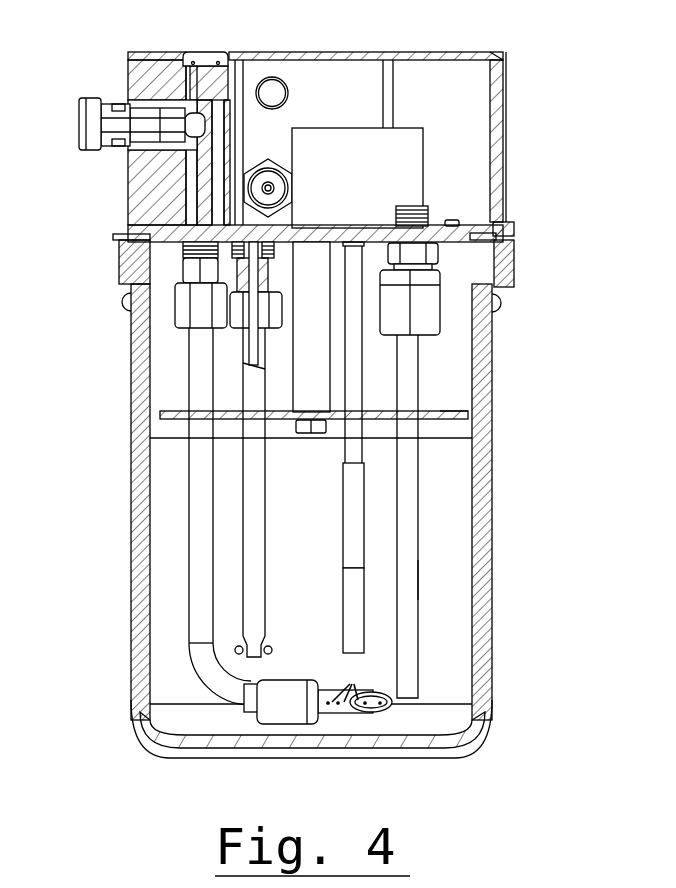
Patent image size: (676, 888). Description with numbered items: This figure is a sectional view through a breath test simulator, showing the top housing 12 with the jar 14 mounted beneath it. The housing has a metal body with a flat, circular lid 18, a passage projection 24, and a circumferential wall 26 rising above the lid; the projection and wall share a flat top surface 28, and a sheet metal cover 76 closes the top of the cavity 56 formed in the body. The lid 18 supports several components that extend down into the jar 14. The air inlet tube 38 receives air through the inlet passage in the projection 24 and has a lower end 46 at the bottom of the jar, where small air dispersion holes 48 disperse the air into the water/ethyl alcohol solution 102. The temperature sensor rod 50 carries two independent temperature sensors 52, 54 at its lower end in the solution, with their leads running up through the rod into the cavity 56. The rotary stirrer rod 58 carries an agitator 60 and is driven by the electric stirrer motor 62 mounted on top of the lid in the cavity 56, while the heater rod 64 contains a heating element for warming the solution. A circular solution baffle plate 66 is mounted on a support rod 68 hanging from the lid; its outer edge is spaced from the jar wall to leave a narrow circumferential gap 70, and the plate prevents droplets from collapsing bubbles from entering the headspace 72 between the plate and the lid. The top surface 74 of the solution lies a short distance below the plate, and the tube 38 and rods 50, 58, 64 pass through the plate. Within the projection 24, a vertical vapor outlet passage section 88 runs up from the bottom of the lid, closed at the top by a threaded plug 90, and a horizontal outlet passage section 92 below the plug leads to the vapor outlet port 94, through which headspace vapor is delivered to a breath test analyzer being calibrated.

The top housing 12 is at (300, 131).
The jar 14 is at (129, 482).
The lid 18 is at (330, 240).
The passage projection 24 is at (133, 192).
The circumferential wall 26 is at (500, 133).
The top surface 28 is at (155, 57).
The air inlet tube 38 is at (188, 530).
The lower end 46 is at (342, 716).
The air dispersion holes 48 is at (347, 683).
The temperature sensor rod 50 is at (265, 530).
The temperature sensor 52 is at (235, 655).
The temperature sensor 54 is at (271, 655).
The cavity 56 is at (452, 101).
The rotary stirrer rod 58 is at (343, 628).
The agitator 60 is at (348, 532).
The electric stirrer motor 62 is at (422, 158).
The heater rod 64 is at (419, 580).
The solution baffle plate 66 is at (388, 412).
The support rod 68 is at (292, 350).
The circumferential gap 70 is at (466, 412).
The headspace 72 is at (455, 369).
The top surface 74 is at (452, 440).
The sheet metal cover 76 is at (393, 52).
The vapor outlet passage section 88 is at (200, 204).
The threaded plug 90 is at (208, 50).
The horizontal outlet passage section 92 is at (158, 122).
The vapor outlet port 94 is at (90, 100).
The water/ethyl alcohol solution 102 is at (457, 509).